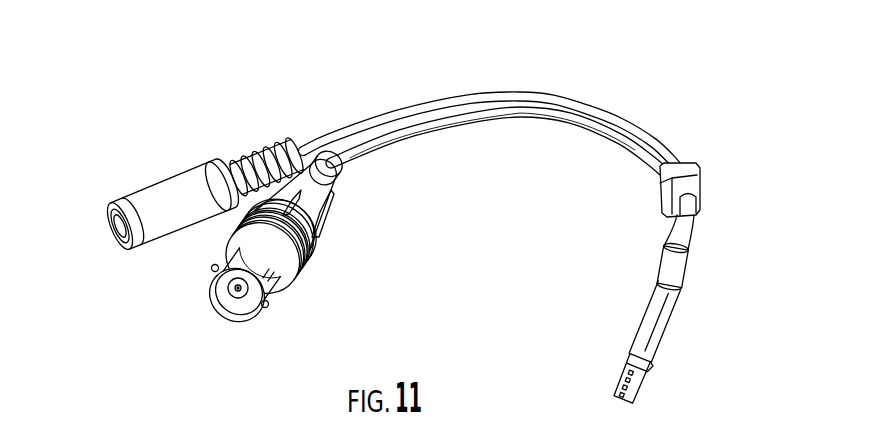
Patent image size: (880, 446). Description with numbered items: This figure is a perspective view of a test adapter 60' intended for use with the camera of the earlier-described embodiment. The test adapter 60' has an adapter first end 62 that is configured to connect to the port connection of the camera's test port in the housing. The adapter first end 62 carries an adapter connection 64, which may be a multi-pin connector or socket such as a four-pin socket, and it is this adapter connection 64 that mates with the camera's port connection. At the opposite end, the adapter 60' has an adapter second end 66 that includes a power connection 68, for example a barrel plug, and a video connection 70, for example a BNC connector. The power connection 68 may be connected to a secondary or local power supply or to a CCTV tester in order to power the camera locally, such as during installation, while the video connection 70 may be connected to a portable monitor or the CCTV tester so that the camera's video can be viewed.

The test adapter 60' is at (515, 128).
The adapter first end 62 is at (703, 285).
The adapter connection 64 is at (595, 387).
The adapter second end 66 is at (311, 122).
The power connection 68 is at (144, 170).
The video connection 70 is at (191, 276).